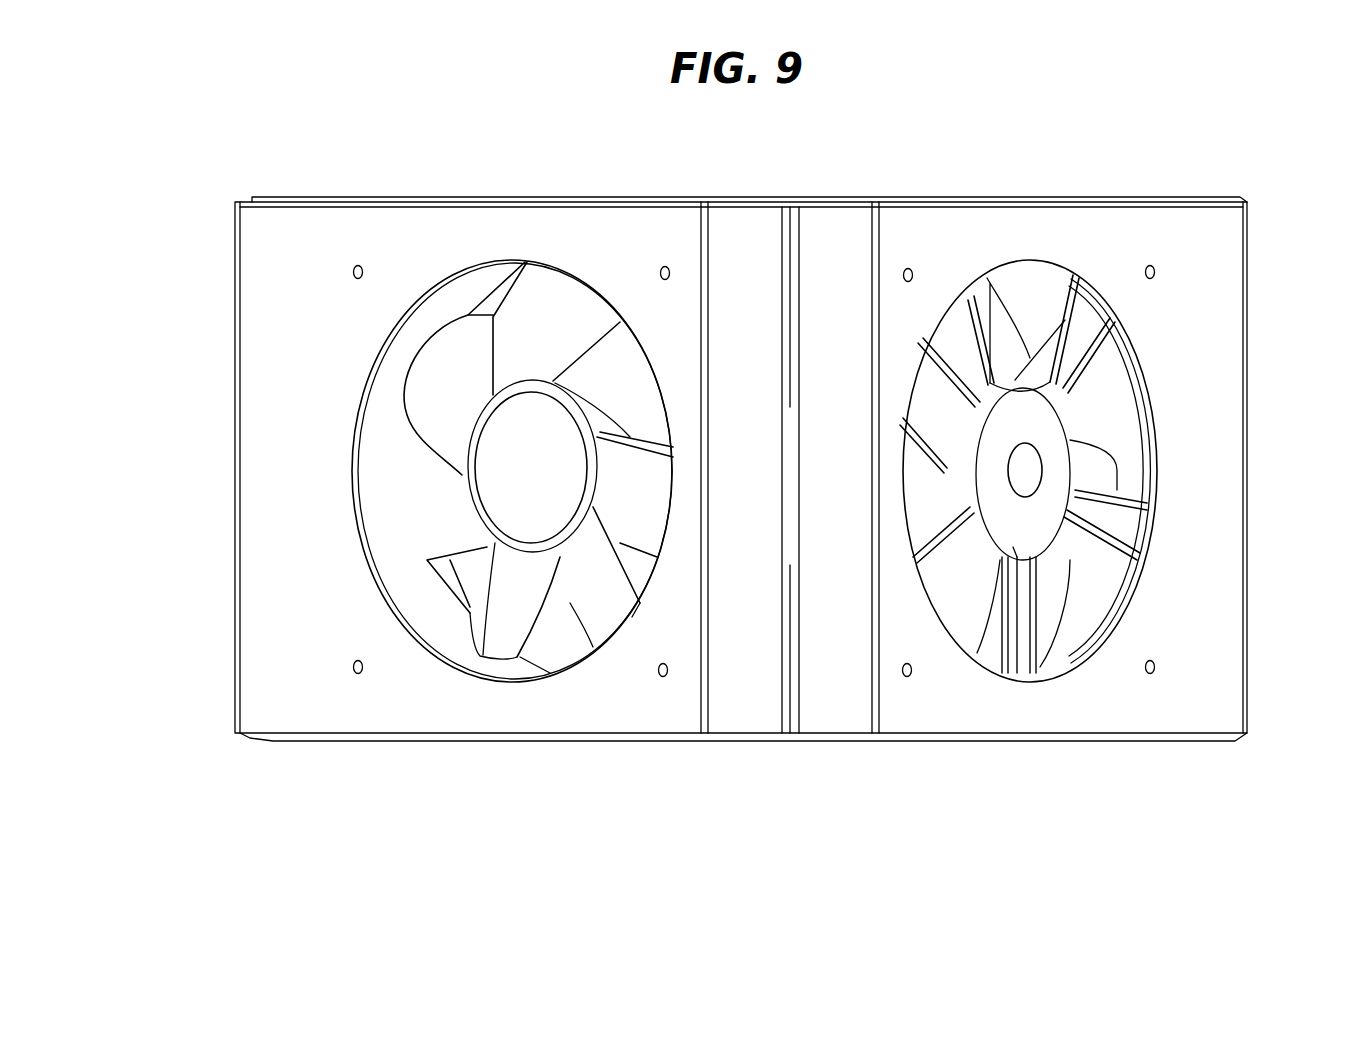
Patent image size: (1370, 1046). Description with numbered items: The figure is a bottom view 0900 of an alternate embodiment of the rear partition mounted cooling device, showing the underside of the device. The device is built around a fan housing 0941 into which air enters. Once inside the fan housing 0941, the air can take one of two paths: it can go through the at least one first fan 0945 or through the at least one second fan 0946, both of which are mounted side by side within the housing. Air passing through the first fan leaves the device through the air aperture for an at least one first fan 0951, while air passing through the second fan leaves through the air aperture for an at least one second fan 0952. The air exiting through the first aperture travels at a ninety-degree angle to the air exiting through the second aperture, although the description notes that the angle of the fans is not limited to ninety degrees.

The bottom view 0900 is at (262, 153).
The fan housing 0941 is at (876, 155).
The at least one first fan 0945 is at (520, 486).
The at least one second fan 0946 is at (1034, 455).
The air aperture for an at least one first fan 0951 is at (488, 586).
The air aperture for an at least one second fan 0952 is at (1070, 594).